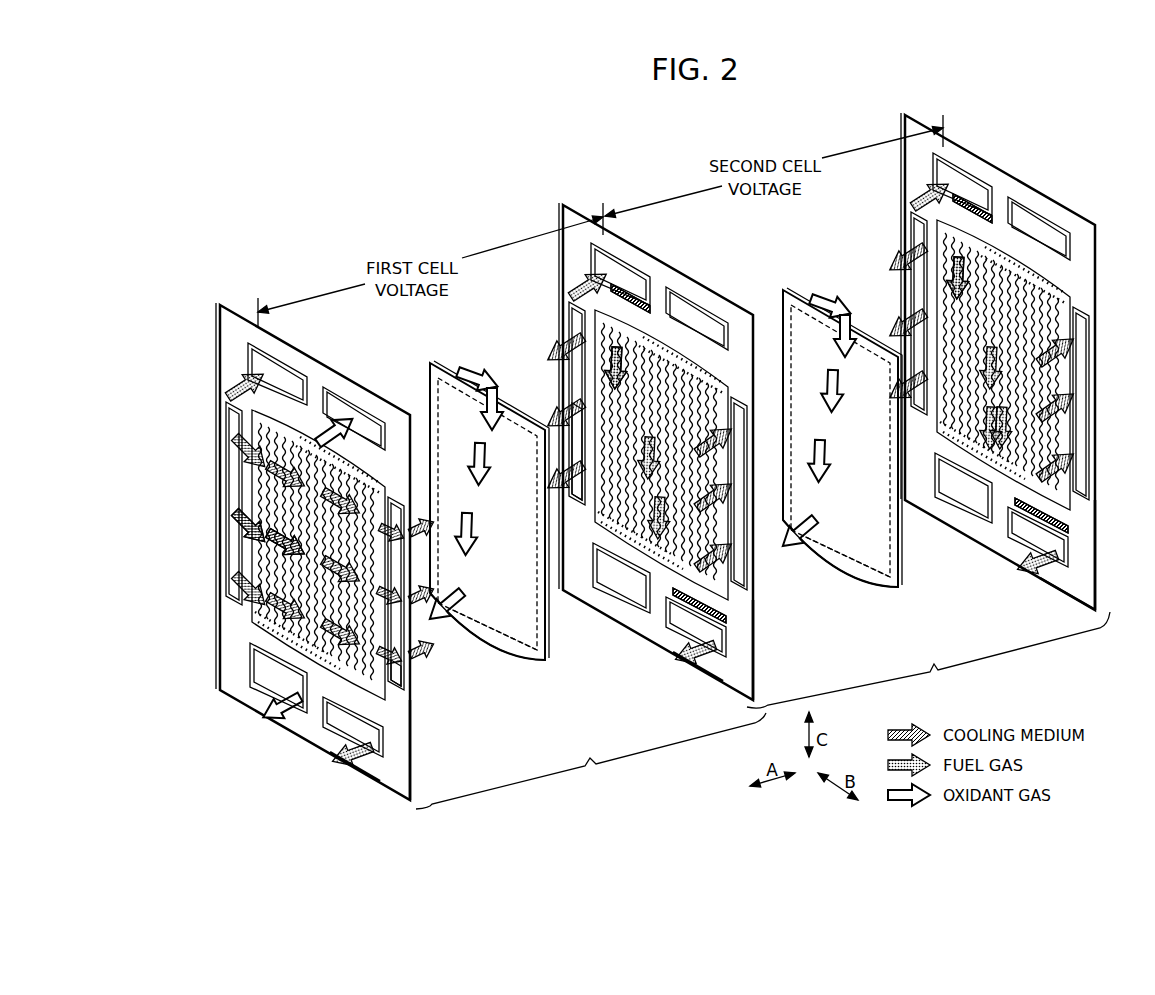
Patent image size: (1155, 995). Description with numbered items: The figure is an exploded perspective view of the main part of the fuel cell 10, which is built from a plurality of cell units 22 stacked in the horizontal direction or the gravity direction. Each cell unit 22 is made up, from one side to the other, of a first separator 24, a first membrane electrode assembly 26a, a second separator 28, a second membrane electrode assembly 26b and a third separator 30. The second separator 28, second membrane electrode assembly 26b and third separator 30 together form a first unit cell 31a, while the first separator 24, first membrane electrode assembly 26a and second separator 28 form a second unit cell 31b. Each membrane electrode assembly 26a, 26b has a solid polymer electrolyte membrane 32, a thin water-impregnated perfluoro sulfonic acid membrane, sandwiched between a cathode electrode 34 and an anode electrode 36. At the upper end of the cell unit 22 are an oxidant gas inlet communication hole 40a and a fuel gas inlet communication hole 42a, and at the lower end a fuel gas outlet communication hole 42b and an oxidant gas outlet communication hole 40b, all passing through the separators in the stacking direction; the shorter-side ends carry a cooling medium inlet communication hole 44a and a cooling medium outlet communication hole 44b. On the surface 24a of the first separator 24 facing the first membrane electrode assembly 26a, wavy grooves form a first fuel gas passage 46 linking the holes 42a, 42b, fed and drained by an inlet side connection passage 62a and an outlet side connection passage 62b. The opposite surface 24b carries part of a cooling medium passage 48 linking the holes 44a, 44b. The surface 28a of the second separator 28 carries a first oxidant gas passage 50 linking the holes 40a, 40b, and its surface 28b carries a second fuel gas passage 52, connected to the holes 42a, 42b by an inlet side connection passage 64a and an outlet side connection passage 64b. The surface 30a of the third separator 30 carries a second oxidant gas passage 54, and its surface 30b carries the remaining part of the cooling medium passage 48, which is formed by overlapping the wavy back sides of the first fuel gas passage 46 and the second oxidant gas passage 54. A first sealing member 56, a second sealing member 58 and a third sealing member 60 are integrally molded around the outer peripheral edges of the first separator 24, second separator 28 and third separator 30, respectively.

The fuel cell 10 is at (197, 211).
The cell unit 22 is at (171, 211).
The first separator 24 is at (903, 118).
The surface of the first separator 24a is at (1097, 548).
The surface of the first separator 24b is at (1097, 580).
The first membrane electrode assembly 26a is at (800, 288).
The second membrane electrode assembly 26b is at (428, 360).
The second separator 28 is at (562, 206).
The surface of the second separator 28a is at (748, 692).
The surface of the second separator 28b is at (706, 670).
The third separator 30 is at (219, 306).
The surface of the third separator 30a is at (400, 771).
The surface of the third separator 30b is at (358, 766).
The first unit cell 31a is at (591, 761).
The second unit cell 31b is at (928, 660).
The solid polymer electrolyte membrane 32 is at (548, 656).
The cathode electrode 34 is at (500, 620).
The anode electrode 36 is at (462, 640).
The oxidant gas inlet communication hole 40a is at (363, 428).
The oxidant gas outlet communication hole 40b is at (258, 678).
The fuel gas inlet communication hole 42a is at (262, 362).
The fuel gas outlet communication hole 42b is at (337, 728).
The cooling medium inlet communication hole 44a is at (236, 493).
The cooling medium outlet communication hole 44b is at (404, 690).
The first fuel gas passage 46 is at (950, 355).
The cooling medium passage 48 is at (262, 527).
The first oxidant gas passage 50 is at (600, 490).
The second fuel gas passage 52 is at (605, 447).
The second oxidant gas passage 54 is at (262, 531).
The first sealing member 56 is at (908, 230).
The second sealing member 58 is at (566, 317).
The third sealing member 60 is at (222, 414).
The inlet side connection passage 62a is at (1000, 205).
The outlet side connection passage 62b is at (1072, 515).
The inlet side connection passage 64a is at (640, 290).
The outlet side connection passage 64b is at (742, 612).